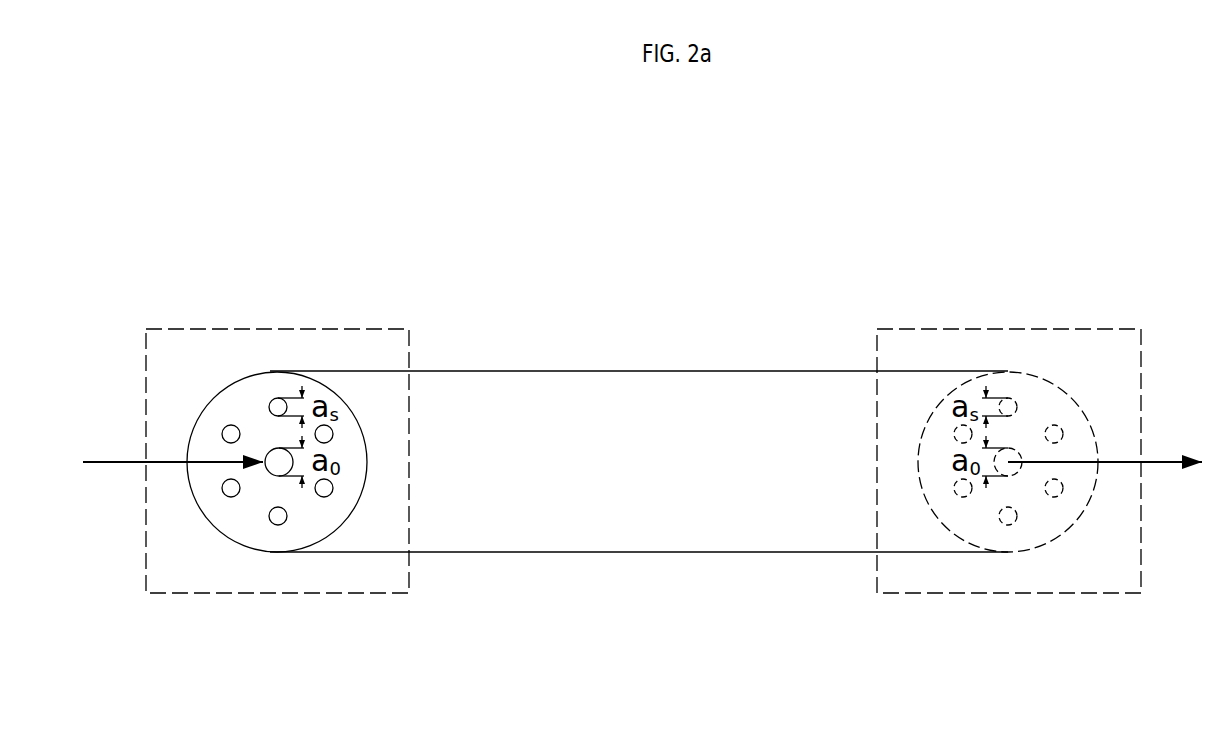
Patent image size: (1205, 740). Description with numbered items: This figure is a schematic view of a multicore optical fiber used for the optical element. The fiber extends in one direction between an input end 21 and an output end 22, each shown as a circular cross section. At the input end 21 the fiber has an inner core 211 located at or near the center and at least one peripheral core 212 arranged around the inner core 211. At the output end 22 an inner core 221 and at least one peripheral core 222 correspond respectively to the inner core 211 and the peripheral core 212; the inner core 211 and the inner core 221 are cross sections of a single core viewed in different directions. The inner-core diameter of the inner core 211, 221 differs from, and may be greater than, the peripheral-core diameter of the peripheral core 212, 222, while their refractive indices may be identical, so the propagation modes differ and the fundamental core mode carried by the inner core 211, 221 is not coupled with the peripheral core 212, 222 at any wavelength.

The input end 21 is at (357, 329).
The inner core 211 is at (268, 450).
The peripheral core 212 is at (333, 433).
The output end 22 is at (938, 329).
The inner core 221 is at (1015, 471).
The peripheral core 222 is at (1010, 398).